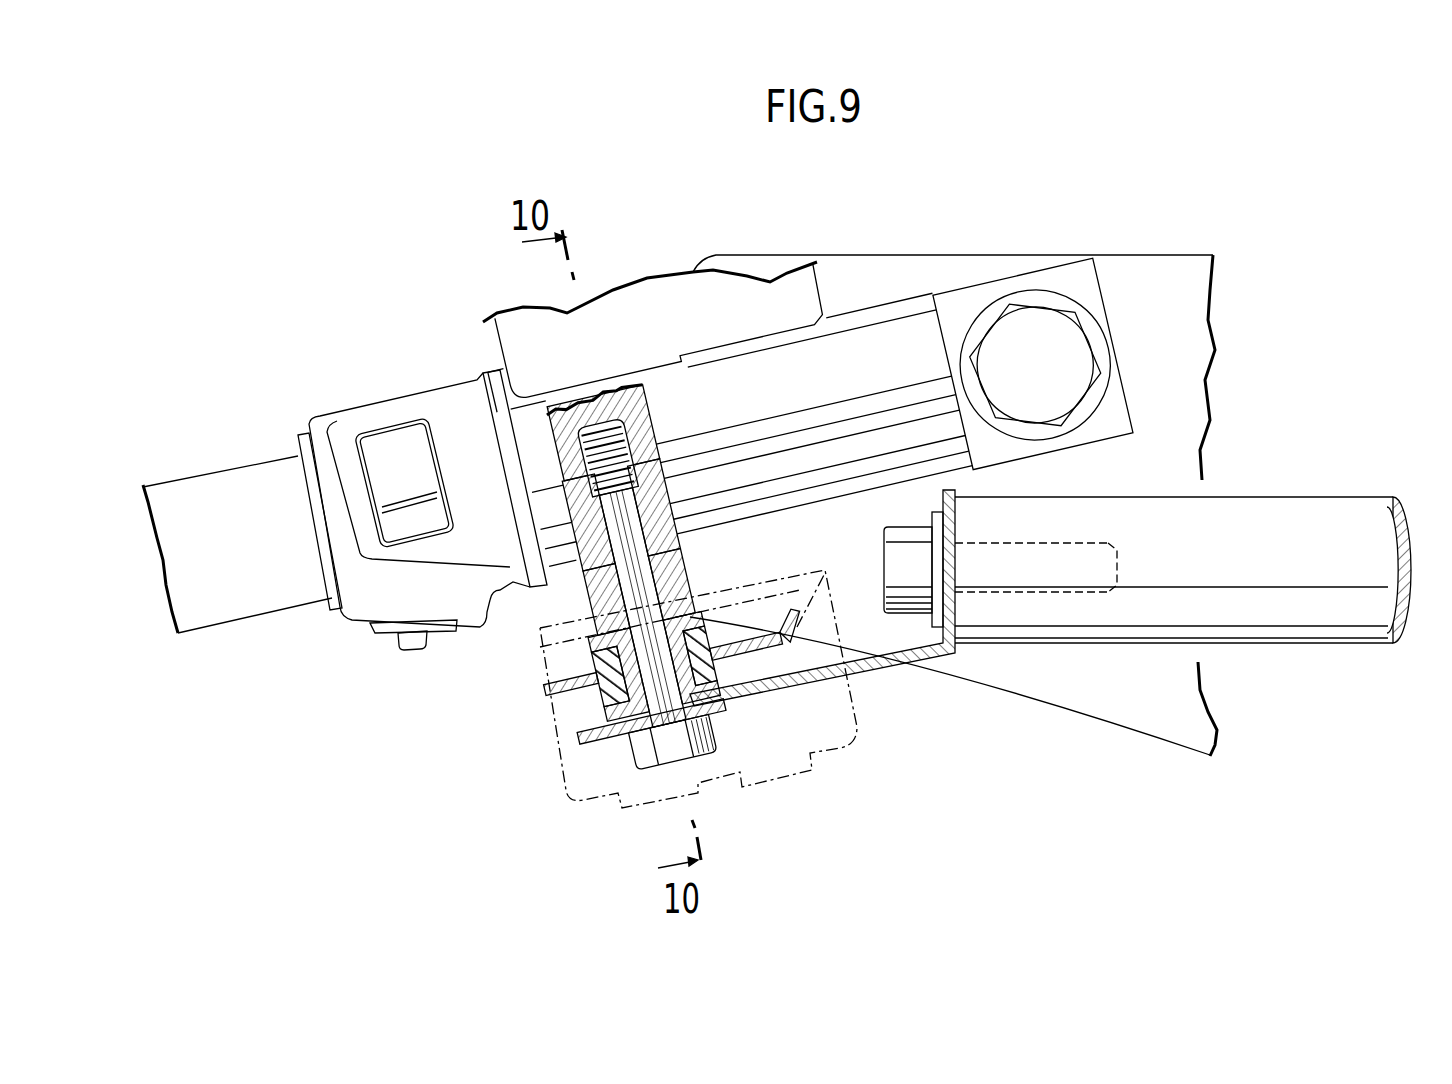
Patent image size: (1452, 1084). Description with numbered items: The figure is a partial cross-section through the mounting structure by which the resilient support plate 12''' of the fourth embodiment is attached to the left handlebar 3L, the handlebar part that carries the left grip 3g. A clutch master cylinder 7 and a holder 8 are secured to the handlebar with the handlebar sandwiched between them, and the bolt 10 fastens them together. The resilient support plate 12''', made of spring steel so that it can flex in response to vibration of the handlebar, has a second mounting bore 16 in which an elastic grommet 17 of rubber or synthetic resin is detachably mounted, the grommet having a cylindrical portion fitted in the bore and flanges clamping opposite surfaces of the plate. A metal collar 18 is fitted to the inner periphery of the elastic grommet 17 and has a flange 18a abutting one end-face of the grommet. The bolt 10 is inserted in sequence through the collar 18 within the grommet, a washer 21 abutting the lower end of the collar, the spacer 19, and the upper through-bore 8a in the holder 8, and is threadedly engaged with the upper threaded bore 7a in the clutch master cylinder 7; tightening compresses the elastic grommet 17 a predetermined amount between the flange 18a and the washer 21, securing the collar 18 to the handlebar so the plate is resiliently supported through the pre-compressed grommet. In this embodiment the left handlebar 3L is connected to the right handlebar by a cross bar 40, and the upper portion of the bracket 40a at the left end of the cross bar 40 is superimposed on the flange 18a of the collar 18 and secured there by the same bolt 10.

The left grip 3g is at (195, 488).
The left handlebar 3L is at (880, 347).
The clutch master cylinder 7 is at (733, 290).
The upper threaded bore 7a is at (647, 390).
The holder 8 is at (633, 508).
The upper through-bore 8a is at (667, 480).
The bolt 10 is at (673, 748).
The resilient support plate 12''' is at (534, 717).
The second mounting bore 16 is at (637, 722).
The elastic grommet 17 is at (842, 657).
The collar 18 is at (682, 675).
The flange 18a is at (692, 710).
The spacer 19 is at (667, 568).
The washer 21 is at (687, 605).
The cross bar 40 is at (1236, 506).
The bracket 40a is at (863, 673).